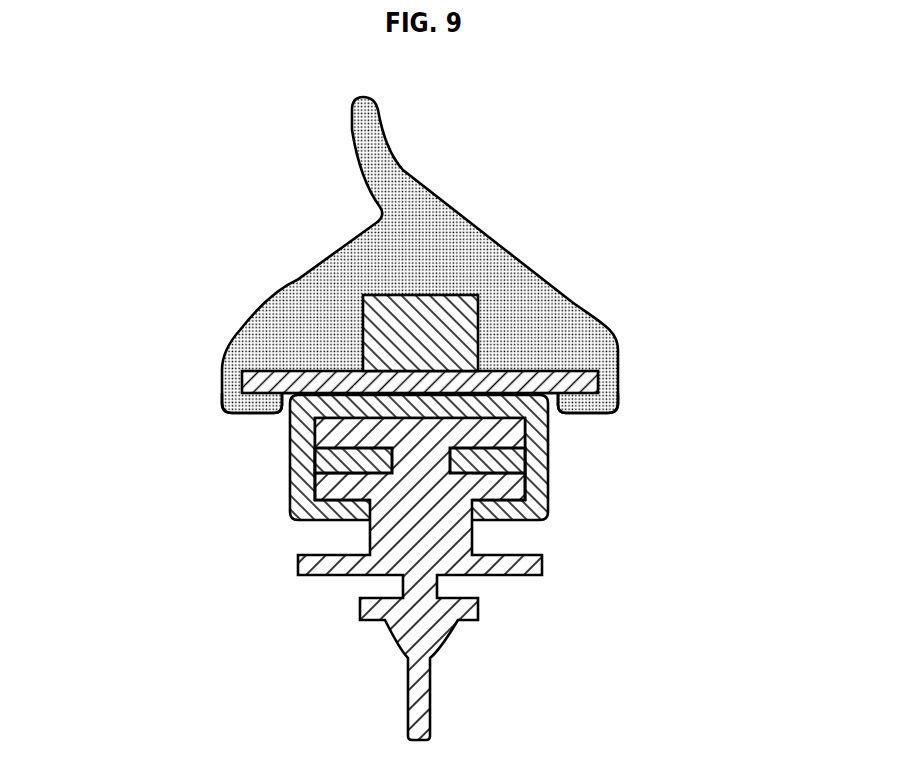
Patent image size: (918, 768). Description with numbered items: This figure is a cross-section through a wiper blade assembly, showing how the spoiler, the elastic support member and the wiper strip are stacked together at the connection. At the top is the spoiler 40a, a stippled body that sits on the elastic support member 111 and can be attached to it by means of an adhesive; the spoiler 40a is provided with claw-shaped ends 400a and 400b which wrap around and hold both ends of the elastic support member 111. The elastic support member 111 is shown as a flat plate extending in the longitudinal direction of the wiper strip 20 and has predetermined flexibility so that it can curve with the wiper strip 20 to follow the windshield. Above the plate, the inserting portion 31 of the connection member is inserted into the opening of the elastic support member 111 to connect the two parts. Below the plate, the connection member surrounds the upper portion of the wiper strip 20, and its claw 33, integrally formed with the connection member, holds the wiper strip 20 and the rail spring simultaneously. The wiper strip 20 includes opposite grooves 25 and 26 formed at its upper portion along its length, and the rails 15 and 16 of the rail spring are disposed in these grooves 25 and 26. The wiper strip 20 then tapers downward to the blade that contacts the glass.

The spoiler 40a is at (463, 230).
The claw-shaped end 400a is at (248, 416).
The claw-shaped end 400b is at (587, 415).
The elastic support member 111 is at (311, 370).
The inserting portion 31 is at (465, 300).
The rail 15 is at (315, 457).
The rail 16 is at (525, 460).
The groove 25 is at (315, 488).
The groove 26 is at (525, 486).
The claw 33 is at (310, 520).
The wiper strip 20 is at (430, 687).